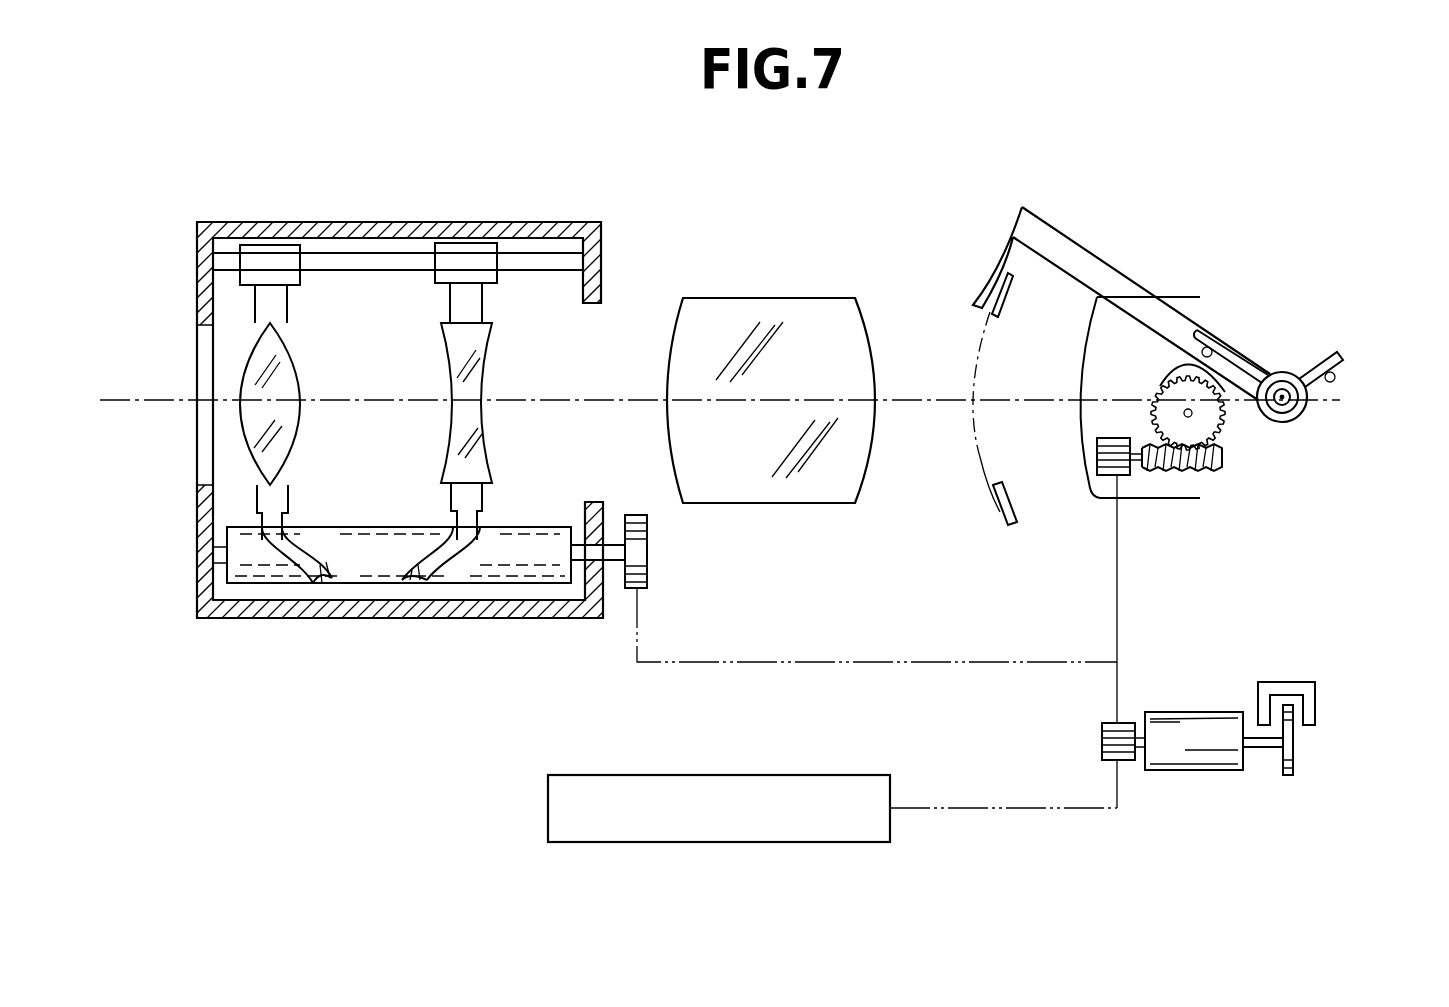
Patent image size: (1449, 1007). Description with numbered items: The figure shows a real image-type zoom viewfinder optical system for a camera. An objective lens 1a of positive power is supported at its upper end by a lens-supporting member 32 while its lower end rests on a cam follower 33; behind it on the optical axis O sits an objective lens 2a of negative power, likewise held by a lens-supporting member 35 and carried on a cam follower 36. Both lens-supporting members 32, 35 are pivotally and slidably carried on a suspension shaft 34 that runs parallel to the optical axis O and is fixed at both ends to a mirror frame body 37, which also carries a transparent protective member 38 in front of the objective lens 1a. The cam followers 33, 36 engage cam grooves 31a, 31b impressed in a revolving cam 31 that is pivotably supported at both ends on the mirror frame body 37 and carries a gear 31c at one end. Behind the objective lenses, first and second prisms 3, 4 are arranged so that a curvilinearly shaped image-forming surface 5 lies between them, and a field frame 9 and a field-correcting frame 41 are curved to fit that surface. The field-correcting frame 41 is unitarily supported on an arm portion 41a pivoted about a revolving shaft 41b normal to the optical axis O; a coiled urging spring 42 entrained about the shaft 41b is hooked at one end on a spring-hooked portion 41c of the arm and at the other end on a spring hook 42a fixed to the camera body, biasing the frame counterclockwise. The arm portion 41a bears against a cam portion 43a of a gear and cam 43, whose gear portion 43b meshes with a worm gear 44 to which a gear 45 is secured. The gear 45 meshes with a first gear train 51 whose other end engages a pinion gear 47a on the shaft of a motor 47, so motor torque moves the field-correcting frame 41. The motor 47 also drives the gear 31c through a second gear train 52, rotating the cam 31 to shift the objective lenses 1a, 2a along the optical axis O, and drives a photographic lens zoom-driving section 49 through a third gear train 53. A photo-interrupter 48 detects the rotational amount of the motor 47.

The optical axis O is at (135, 398).
The objective lens 1a is at (303, 432).
The objective lens 2a is at (487, 444).
The first prism 3 is at (1082, 342).
The second prism 4 is at (773, 298).
The image-forming surface 5 is at (980, 457).
The field frame 9 is at (1012, 505).
The revolving cam 31 is at (392, 614).
The cam groove 31a is at (320, 558).
The cam groove 31b is at (440, 560).
The gear 31c is at (650, 563).
The lens-supporting member 32 is at (287, 303).
The cam follower 33 is at (288, 500).
The suspension shaft 34 is at (390, 275).
The lens-supporting member 35 is at (485, 303).
The cam follower 36 is at (486, 492).
The mirror frame body 37 is at (430, 228).
The transparent protective member 38 is at (200, 428).
The field-correcting frame 41 is at (993, 253).
The arm portion 41a is at (1068, 230).
The revolving shaft 41b is at (1287, 407).
The spring-hooked portion 41c is at (1187, 333).
The urging spring 42 is at (1242, 363).
The spring hook 42a is at (1340, 377).
The gear and cam 43 is at (1158, 425).
The cam portion 43a is at (1175, 370).
The gear portion 43b is at (1153, 420).
The worm gear 44 is at (1205, 470).
The gear 45 is at (1097, 478).
The motor 47 is at (1208, 712).
The pinion gear 47a is at (1102, 740).
The photo-interrupter 48 is at (1292, 682).
The photographic lens zoom-driving section 49 is at (548, 792).
The first gear train 51 is at (1120, 540).
The second gear train 52 is at (855, 662).
The third gear train 53 is at (1050, 810).